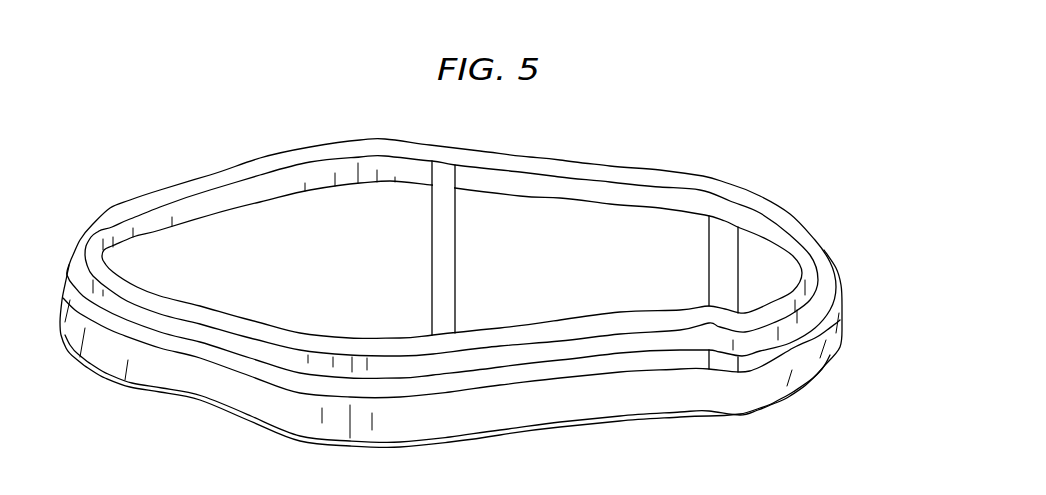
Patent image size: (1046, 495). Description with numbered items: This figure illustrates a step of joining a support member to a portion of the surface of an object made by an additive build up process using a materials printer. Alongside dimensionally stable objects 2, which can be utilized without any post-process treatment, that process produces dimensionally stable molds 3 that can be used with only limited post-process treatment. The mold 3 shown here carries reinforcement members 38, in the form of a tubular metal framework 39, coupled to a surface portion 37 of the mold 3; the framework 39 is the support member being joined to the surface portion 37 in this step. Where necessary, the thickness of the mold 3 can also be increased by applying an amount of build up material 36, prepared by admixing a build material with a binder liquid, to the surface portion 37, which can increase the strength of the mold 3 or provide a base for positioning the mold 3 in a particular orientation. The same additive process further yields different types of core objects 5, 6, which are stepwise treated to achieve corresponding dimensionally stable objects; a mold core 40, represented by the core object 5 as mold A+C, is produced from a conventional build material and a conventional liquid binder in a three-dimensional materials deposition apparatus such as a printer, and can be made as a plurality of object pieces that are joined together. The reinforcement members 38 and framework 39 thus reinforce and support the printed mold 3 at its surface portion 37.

The dimensionally stable object 2 is at (495, 355).
The dimensionally stable mold 3 is at (495, 355).
The core object 5 is at (495, 355).
The core object 6 is at (800, 400).
The build up material 36 is at (492, 259).
The surface portion 37 is at (846, 345).
The reinforcement members 38 is at (451, 226).
The tubular metal framework 39 is at (622, 173).
The mold core 40 is at (847, 307).